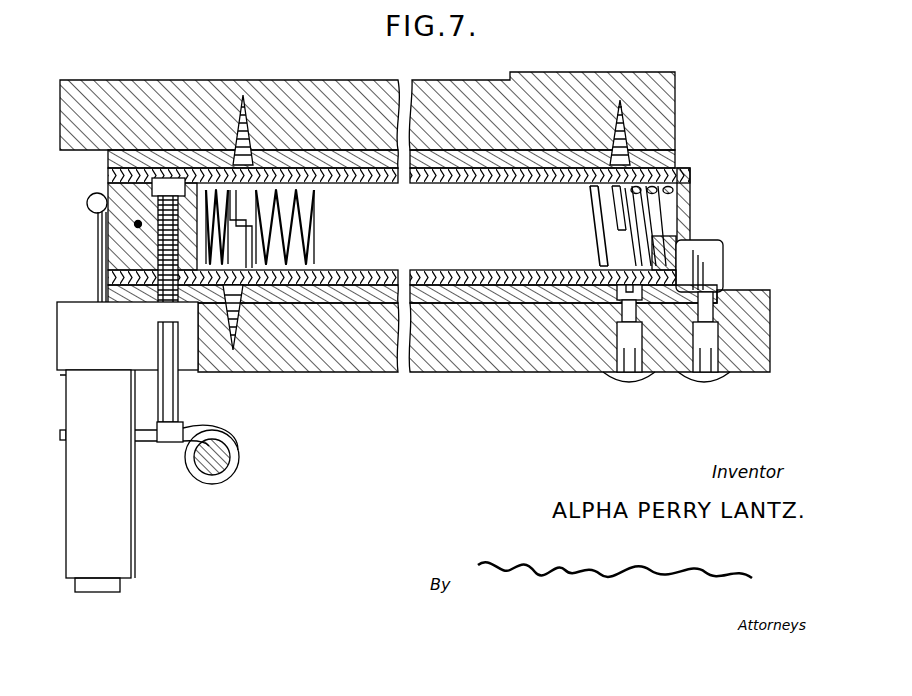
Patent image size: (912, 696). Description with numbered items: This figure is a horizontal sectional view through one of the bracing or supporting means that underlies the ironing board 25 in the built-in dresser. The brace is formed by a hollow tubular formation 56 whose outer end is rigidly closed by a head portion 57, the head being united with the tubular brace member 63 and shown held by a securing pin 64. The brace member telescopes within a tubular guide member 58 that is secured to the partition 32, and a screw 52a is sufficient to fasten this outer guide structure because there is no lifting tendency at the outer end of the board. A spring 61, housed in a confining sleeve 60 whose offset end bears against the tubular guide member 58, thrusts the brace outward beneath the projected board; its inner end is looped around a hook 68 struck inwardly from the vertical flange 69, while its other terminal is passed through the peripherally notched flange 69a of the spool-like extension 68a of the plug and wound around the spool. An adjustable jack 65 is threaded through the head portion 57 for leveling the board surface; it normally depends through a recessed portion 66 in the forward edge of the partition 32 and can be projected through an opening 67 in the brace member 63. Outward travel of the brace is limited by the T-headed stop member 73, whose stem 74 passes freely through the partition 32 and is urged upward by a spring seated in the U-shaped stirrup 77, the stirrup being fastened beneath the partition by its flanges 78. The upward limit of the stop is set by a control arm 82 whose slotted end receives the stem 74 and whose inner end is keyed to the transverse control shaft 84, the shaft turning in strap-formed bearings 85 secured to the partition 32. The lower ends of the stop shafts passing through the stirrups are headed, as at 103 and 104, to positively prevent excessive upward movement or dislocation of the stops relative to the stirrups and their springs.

The headed end 103 is at (77, 2).
The tubular formation 56 is at (325, 150).
The head portion 57 is at (108, 186).
The securing pin 64 is at (134, 228).
The tubular brace member 63 is at (345, 290).
The tubular guide member 58 is at (375, 300).
The peripherally notched flange 69a is at (250, 350).
The opening 67 is at (162, 178).
The spool-like extension 68a is at (205, 186).
The screw 52a is at (230, 272).
The stem 74 is at (98, 233).
The T-headed stop member 73 is at (87, 206).
The recessed portion 66 is at (72, 352).
The adjustable jack 65 is at (182, 410).
The flange 78 is at (66, 376).
The stirrup 77 is at (136, 525).
The headed end 104 is at (106, 586).
The control arm 82 is at (145, 446).
The bearing 85 is at (240, 448).
The control shaft 84 is at (232, 462).
The ironing board 25 is at (435, 84).
The confining sleeve 60 is at (482, 184).
The vertical flange 69 is at (692, 184).
The spring 61 is at (592, 215).
The hook 68 is at (660, 240).
The partition 32 is at (463, 375).